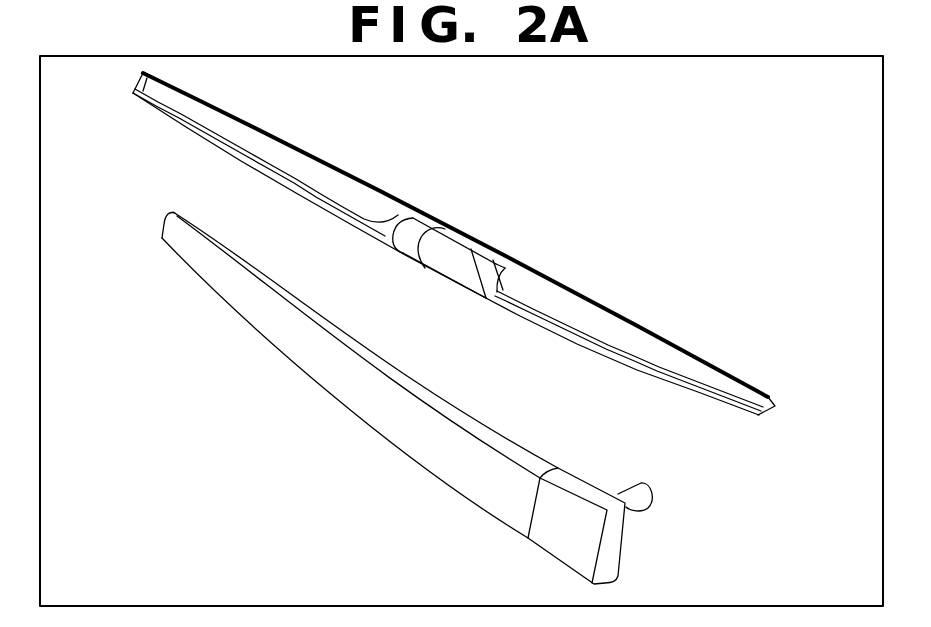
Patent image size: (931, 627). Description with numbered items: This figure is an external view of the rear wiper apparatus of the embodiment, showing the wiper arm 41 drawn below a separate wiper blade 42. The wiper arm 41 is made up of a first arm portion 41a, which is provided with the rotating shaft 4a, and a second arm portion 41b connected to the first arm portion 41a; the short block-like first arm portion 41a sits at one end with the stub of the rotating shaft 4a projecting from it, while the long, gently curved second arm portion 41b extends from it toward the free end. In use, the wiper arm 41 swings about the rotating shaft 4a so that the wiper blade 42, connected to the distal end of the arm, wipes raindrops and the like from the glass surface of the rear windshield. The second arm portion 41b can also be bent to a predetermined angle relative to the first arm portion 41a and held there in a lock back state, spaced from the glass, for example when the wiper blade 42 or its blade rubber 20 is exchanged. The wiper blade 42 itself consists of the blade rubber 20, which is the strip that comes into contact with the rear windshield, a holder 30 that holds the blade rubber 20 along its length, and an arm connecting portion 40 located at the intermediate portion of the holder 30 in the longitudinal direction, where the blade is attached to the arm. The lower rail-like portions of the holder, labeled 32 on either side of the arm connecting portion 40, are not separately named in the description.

The blade rubber 20 is at (773, 406).
The holder 30 is at (608, 323).
The rail portion 32 is at (302, 187).
The arm connecting portion 40 is at (442, 260).
The wiper arm 41 is at (393, 400).
The first arm portion 41a is at (565, 553).
The second arm portion 41b is at (410, 430).
The wiper blade 42 is at (471, 222).
The rotating shaft 4a is at (640, 490).